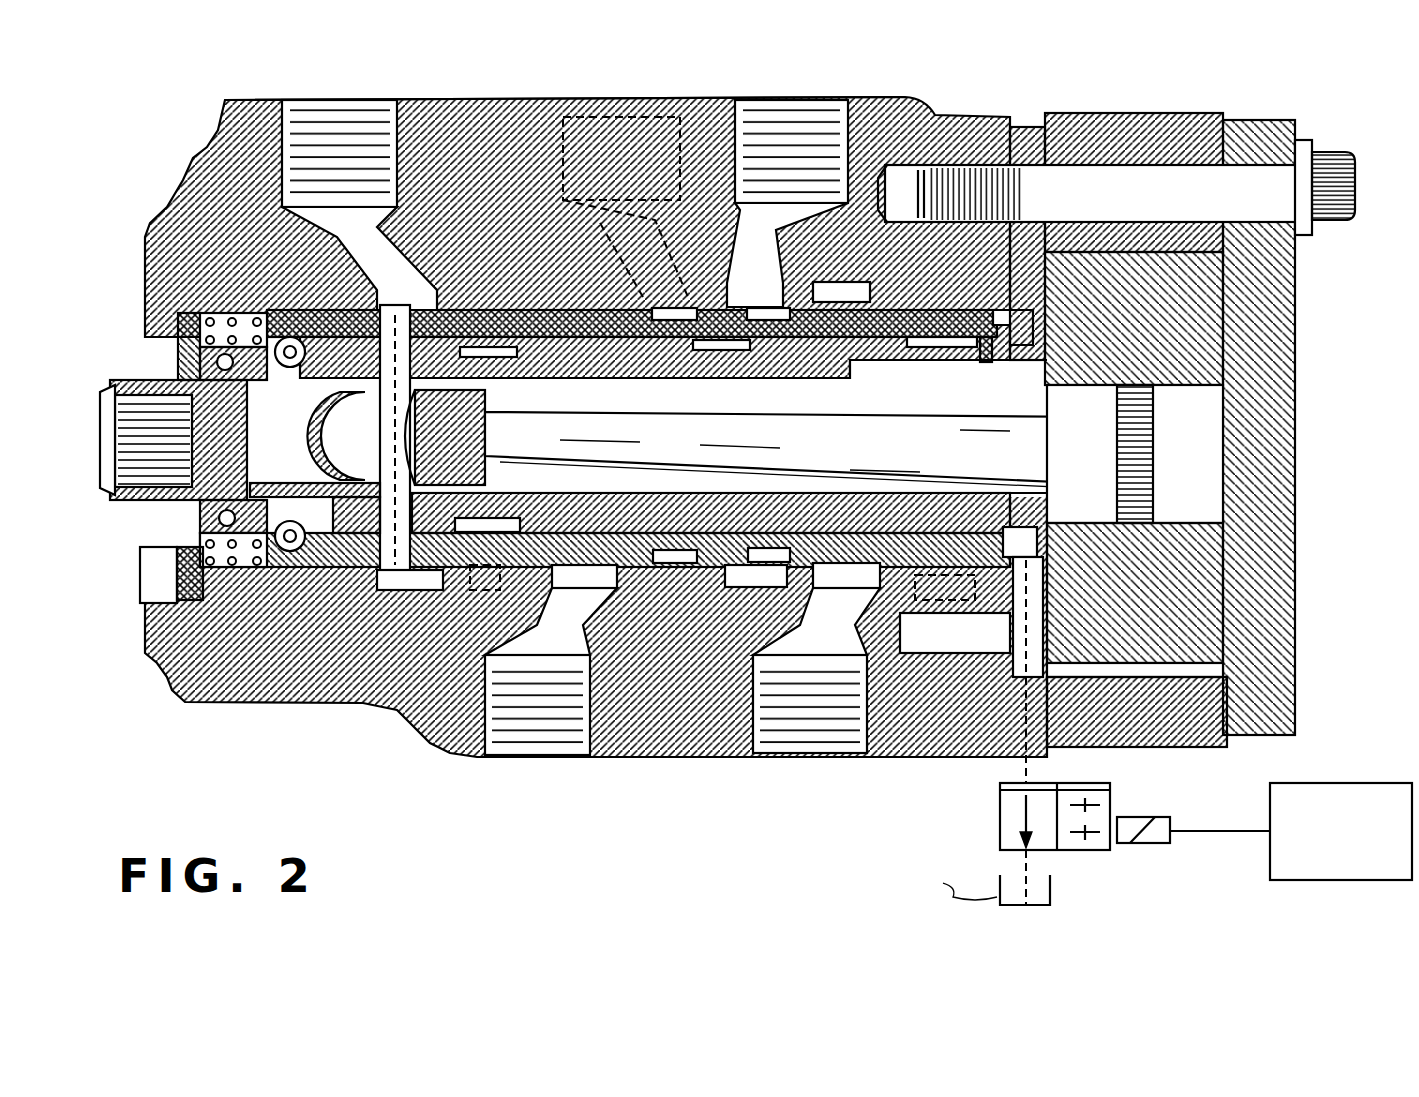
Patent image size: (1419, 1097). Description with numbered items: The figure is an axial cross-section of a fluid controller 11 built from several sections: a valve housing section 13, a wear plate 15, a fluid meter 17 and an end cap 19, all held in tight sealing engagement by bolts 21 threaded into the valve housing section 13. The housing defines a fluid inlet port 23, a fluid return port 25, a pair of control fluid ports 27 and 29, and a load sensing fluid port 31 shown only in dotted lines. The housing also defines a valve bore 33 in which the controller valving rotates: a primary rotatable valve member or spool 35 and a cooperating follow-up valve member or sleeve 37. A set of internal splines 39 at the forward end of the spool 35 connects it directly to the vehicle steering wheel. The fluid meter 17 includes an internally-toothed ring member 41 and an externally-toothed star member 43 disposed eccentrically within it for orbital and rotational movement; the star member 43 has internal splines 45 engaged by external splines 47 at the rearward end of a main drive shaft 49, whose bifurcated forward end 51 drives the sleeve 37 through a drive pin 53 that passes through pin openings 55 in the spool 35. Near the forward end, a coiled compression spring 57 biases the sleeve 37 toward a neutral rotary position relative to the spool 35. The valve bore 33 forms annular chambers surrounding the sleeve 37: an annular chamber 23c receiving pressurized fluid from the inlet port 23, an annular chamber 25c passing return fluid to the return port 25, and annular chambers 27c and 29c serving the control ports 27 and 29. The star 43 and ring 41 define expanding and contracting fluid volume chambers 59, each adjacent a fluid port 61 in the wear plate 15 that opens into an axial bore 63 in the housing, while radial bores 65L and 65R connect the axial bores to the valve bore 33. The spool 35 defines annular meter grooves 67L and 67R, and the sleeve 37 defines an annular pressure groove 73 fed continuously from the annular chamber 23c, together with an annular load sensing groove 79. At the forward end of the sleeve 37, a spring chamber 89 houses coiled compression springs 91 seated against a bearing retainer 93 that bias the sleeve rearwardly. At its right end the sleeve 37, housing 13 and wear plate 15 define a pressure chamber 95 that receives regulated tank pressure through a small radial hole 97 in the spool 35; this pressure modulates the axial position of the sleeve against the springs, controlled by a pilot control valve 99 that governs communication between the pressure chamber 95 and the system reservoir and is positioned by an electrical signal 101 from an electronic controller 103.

The fluid controller 11 is at (490, 100).
The valve housing section 13 is at (235, 150).
The wear plate 15 is at (1025, 135).
The fluid meter 17 is at (1147, 108).
The end cap 19 is at (1288, 365).
The bolts 21 is at (1330, 150).
The fluid inlet port 23 is at (838, 130).
The annular chamber 23c is at (775, 300).
The fluid return port 25 is at (372, 130).
The annular chamber 25c is at (408, 593).
The control fluid port 27 is at (563, 720).
The annular chamber 27c is at (547, 297).
The control fluid port 29 is at (837, 710).
The annular chamber 29c is at (870, 292).
The load sensing fluid port 31 is at (655, 125).
The valve bore 33 is at (318, 570).
The rotatable valve member (spool) 35 is at (785, 362).
The follow-up valve member (sleeve) 37 is at (630, 368).
The internal splines 39 is at (105, 405).
The ring member 41 is at (1227, 693).
The star member 43 is at (1134, 318).
The internal splines 45 is at (1185, 517).
The external splines 47 is at (1158, 455).
The main drive shaft 49 is at (799, 450).
The bifurcated forward end 51 is at (470, 398).
The drive pin 53 is at (478, 437).
The pin openings 55 is at (447, 497).
The coiled compression spring 57 is at (300, 510).
The fluid volume chambers 59 is at (1123, 663).
The fluid port 61 is at (1047, 617).
The axial bores 63 is at (933, 652).
The radial bore 65L is at (453, 617).
The radial bore 65R is at (928, 597).
The annular meter groove 67L is at (525, 525).
The annular meter groove 67R is at (925, 350).
The annular pressure groove 73 is at (773, 553).
The annular load sensing groove 79 is at (680, 556).
The spring chamber 89 is at (230, 315).
The coiled compression springs 91 is at (242, 570).
The bearing retainer 93 is at (167, 573).
The pressure chamber 95 is at (1030, 322).
The small radial hole 97 is at (988, 362).
The pilot control valve 99 is at (997, 813).
The electrical signal 101 is at (1240, 830).
The electronic controller 103 is at (1350, 780).